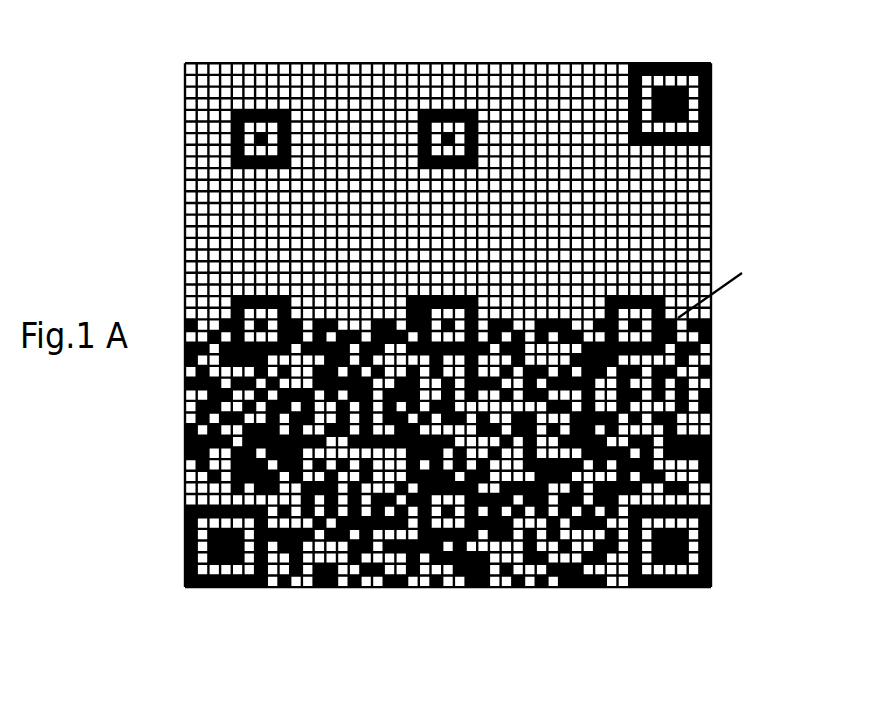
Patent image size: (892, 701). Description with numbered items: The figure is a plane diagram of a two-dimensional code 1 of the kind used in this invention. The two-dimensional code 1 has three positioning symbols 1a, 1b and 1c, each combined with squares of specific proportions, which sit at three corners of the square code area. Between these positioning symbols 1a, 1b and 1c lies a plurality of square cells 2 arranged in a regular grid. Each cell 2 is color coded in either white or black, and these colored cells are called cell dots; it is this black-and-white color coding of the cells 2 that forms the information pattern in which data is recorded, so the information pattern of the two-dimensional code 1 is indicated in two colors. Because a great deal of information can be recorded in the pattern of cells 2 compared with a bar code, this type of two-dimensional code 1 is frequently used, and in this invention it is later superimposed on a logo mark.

The two-dimensional code 1 is at (507, 336).
The positioning symbol 1a is at (217, 587).
The positioning symbol 1b is at (712, 580).
The positioning symbol 1c is at (711, 122).
The square cell 2 is at (519, 80).